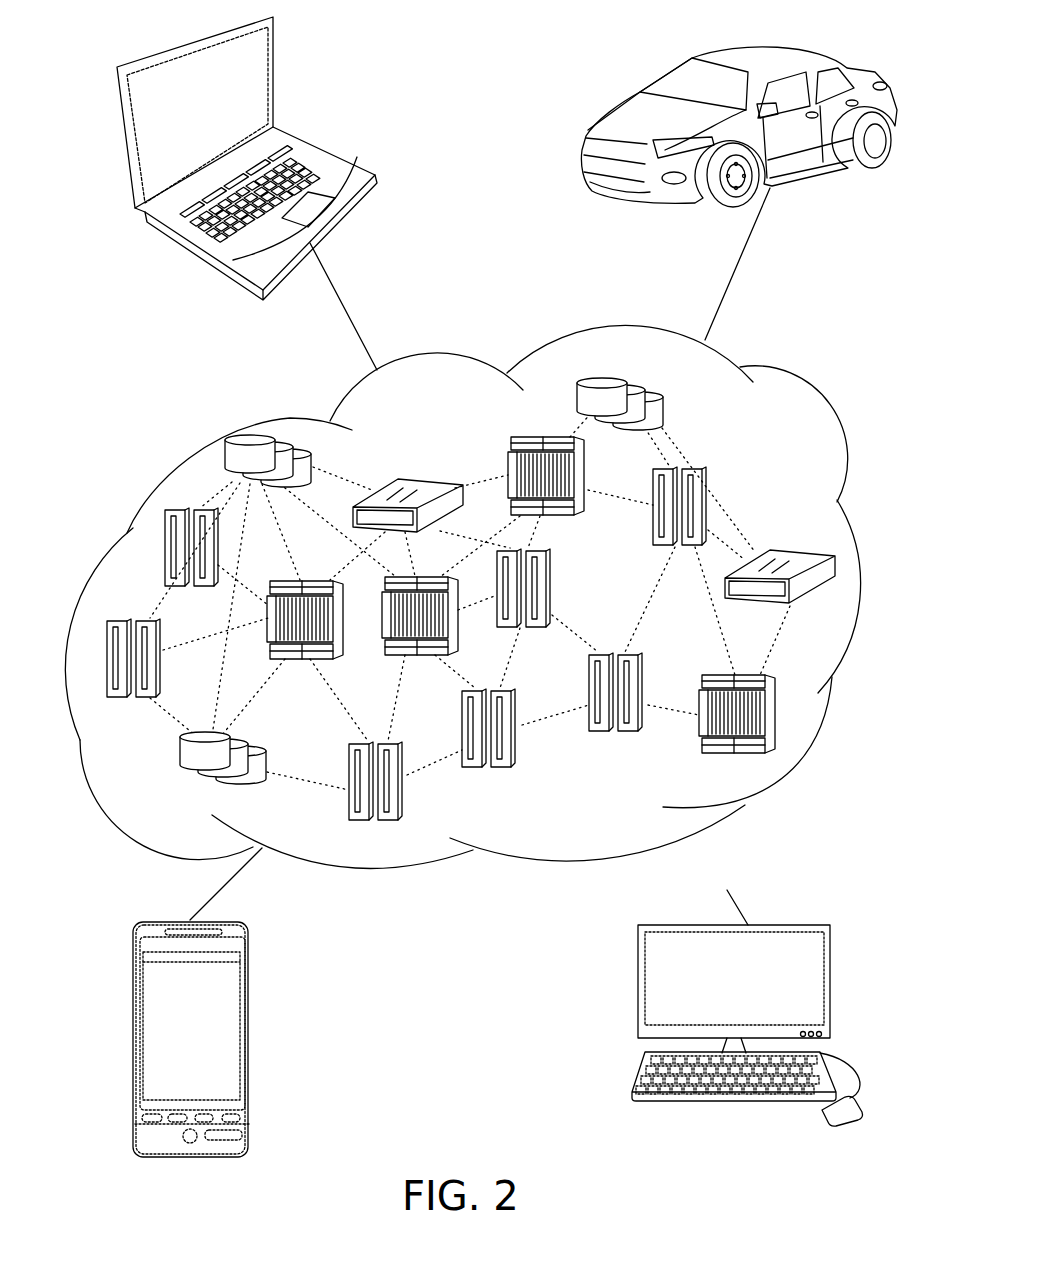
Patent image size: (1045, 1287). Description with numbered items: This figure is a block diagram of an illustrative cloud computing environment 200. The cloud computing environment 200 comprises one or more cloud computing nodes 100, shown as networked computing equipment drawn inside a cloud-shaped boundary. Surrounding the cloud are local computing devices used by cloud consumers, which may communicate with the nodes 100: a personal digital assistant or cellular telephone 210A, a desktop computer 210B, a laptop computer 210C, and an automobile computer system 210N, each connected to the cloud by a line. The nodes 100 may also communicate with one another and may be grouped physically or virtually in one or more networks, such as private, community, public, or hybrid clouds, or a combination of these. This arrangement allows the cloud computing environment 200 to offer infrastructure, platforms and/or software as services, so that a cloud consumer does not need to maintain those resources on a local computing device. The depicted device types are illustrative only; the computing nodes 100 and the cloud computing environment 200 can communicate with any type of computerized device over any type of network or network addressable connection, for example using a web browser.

The cloud computing node 100 is at (805, 544).
The cloud computing environment 200 is at (810, 392).
The personal digital assistant (PDA) or cellular telephone 210A is at (247, 945).
The desktop computer 210B is at (830, 943).
The laptop computer 210C is at (333, 153).
The automobile computer system 210N is at (847, 68).